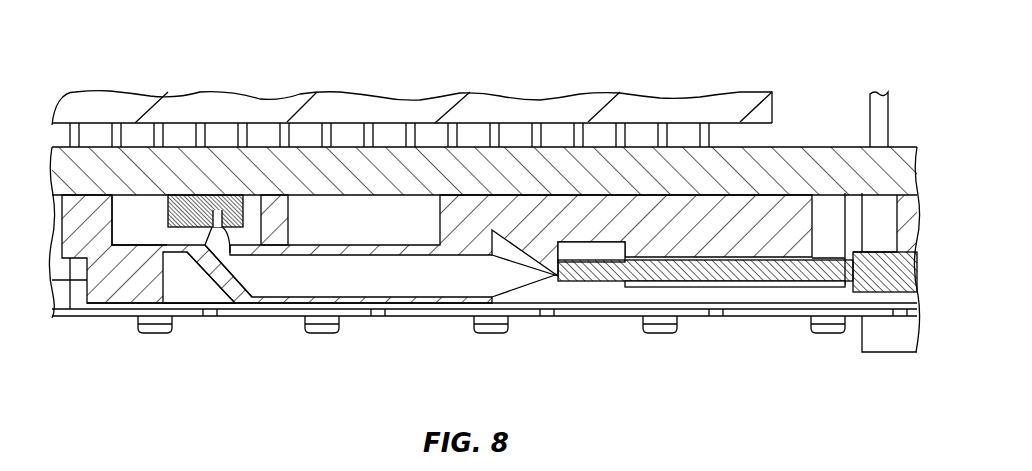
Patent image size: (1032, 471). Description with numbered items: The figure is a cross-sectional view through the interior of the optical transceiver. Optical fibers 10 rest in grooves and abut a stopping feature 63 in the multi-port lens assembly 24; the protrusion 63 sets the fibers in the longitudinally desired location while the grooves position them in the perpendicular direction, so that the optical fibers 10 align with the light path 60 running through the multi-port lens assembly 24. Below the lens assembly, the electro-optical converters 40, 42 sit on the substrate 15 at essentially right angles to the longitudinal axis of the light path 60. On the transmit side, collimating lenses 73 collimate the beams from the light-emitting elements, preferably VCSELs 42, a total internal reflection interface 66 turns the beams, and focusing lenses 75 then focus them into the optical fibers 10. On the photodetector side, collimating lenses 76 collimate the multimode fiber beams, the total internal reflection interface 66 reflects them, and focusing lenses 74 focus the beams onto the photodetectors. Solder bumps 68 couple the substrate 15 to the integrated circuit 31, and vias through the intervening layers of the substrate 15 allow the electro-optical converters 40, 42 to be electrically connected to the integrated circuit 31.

The optical fibers 10 is at (730, 270).
The substrate 15 is at (130, 163).
The multi-port lens assembly 24 is at (763, 218).
The integrated circuit 31 is at (438, 100).
The electro-optical converter 40 is at (173, 130).
The VCSEL 42 is at (200, 203).
The light path 60 is at (347, 282).
The stopping feature 63 is at (558, 250).
The total internal reflection interface 66 is at (232, 280).
The solder bumps 68 is at (663, 130).
The collimating lenses 73 is at (223, 144).
The focusing lenses 74 is at (217, 250).
The focusing lenses 75 is at (525, 329).
The collimating lenses 76 is at (515, 278).